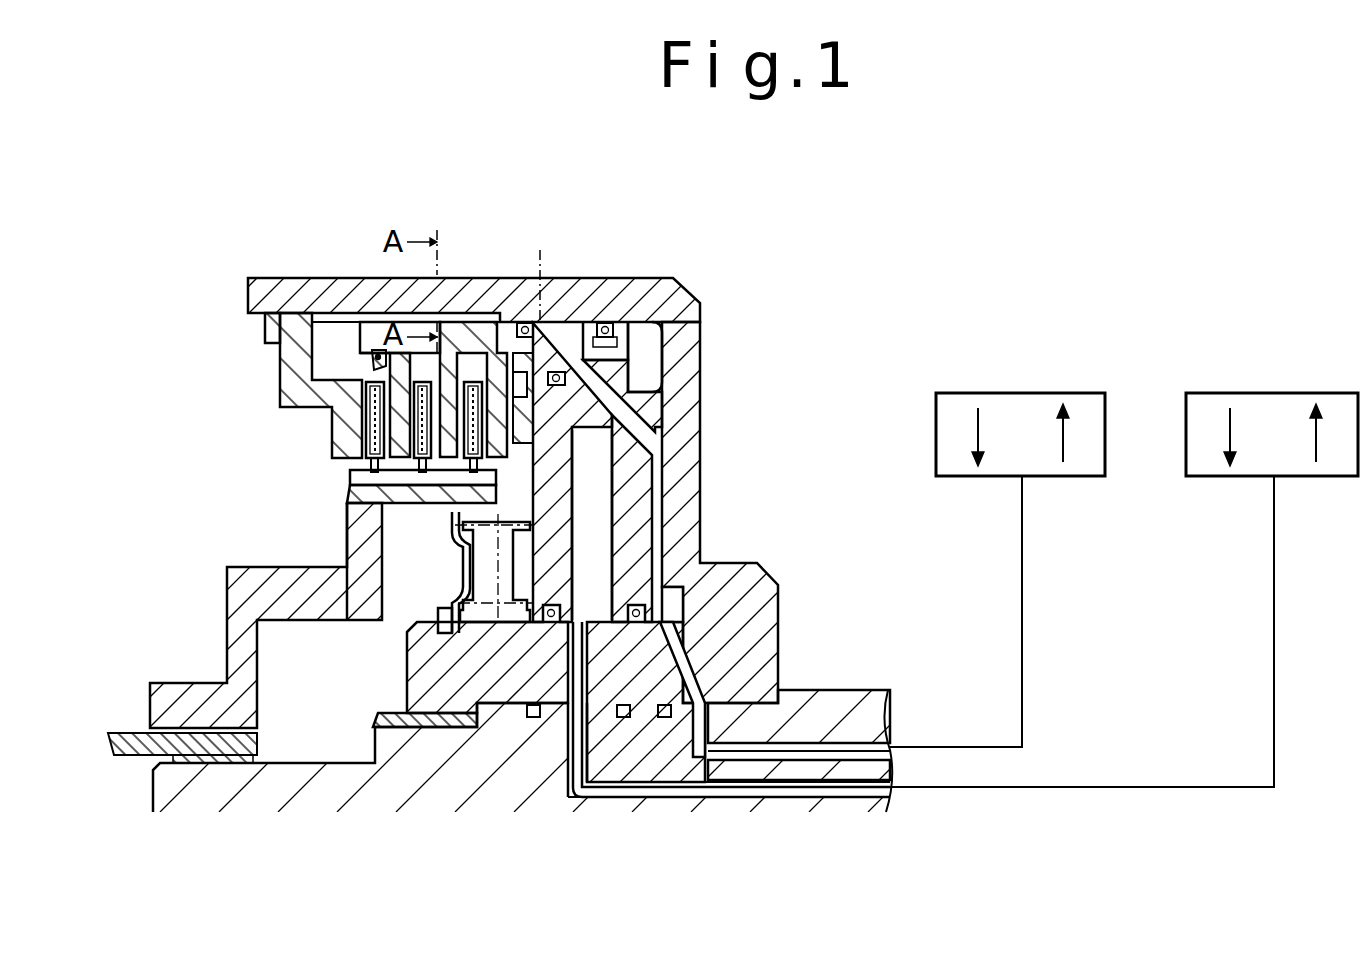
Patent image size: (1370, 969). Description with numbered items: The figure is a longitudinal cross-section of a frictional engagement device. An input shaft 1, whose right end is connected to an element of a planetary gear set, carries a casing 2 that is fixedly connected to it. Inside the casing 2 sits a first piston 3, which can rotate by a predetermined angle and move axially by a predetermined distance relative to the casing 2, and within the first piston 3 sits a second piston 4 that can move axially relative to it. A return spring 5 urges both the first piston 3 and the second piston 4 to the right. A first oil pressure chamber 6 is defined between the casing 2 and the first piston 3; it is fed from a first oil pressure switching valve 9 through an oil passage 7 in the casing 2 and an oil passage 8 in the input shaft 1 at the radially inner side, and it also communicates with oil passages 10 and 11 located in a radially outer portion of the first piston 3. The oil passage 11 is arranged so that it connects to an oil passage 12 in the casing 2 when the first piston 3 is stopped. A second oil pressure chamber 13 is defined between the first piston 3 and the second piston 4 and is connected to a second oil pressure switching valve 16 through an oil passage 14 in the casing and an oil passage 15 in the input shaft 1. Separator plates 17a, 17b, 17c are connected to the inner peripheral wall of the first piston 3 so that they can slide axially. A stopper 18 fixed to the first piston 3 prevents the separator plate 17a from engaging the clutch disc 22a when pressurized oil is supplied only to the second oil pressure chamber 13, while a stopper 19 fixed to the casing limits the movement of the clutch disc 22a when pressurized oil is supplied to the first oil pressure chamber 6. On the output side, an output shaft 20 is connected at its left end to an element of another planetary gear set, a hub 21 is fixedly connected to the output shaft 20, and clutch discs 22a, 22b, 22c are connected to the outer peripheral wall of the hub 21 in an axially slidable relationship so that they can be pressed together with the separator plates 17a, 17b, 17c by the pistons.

The input shaft 1 is at (862, 690).
The casing 2 is at (692, 481).
The first piston 3 is at (652, 411).
The second piston 4 is at (594, 531).
The return spring 5 is at (493, 568).
The first oil pressure chamber 6 is at (650, 356).
The oil passage 7 is at (697, 650).
The oil passage 8 is at (886, 741).
The first oil pressure switching valve 9 is at (936, 417).
The oil passage 10 is at (640, 357).
The oil passage 11 is at (597, 322).
The oil passage 12 is at (572, 292).
The second oil pressure chamber 13 is at (578, 541).
The oil passage 14 is at (557, 696).
The oil passage 15 is at (722, 790).
The second oil pressure switching valve 16 is at (1186, 417).
The separator plate 17a is at (345, 400).
The separator plate 17b is at (447, 380).
The separator plate 17c is at (499, 385).
The stopper 18 is at (377, 348).
The stopper 19 is at (293, 370).
The output shaft 20 is at (122, 740).
The hub 21 is at (245, 583).
The clutch disc 22a is at (357, 466).
The clutch disc 22b is at (347, 505).
The clutch disc 22c is at (458, 486).